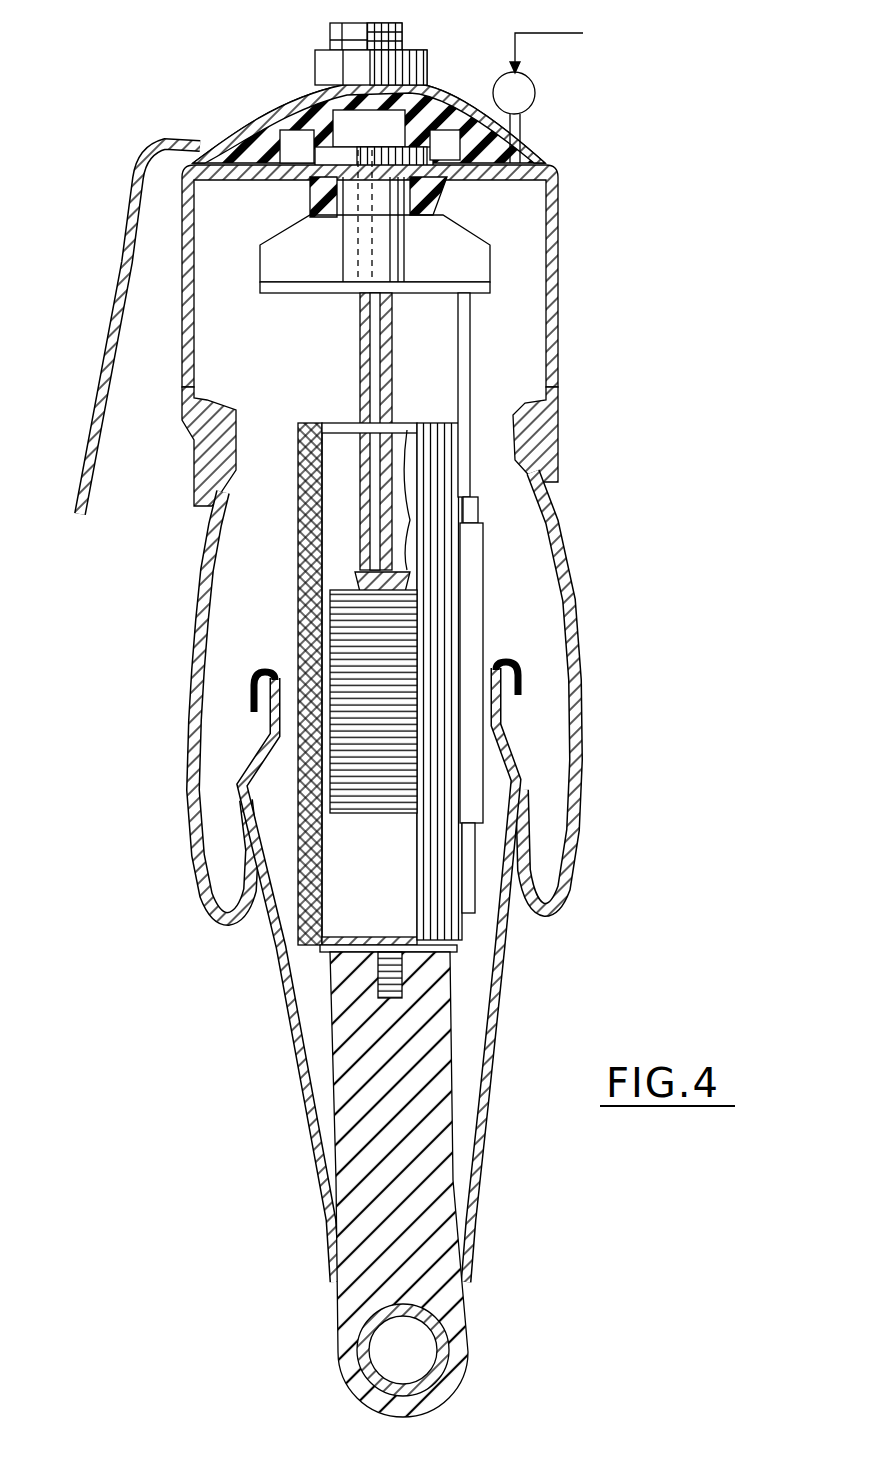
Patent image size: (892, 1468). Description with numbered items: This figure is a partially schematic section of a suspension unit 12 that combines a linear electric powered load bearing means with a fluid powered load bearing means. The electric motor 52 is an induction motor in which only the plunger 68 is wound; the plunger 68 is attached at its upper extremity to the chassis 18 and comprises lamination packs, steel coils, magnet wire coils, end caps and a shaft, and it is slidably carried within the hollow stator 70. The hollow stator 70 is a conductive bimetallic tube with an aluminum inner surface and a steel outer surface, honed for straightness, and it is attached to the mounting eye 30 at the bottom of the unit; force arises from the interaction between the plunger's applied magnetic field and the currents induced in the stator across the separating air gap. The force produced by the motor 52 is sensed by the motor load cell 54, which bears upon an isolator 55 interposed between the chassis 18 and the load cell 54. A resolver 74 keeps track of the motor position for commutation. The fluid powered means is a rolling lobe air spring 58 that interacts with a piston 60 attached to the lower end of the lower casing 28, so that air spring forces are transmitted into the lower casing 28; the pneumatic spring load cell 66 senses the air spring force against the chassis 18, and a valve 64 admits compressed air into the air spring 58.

The suspension unit 12 is at (344, 719).
The chassis 18 is at (128, 182).
The lower casing 28 is at (350, 1288).
The mounting eye 30 is at (447, 1360).
The electric motor 52 is at (274, 432).
The motor load cell 54 is at (472, 252).
The isolator 55 is at (430, 178).
The rolling lobe air spring 58 is at (195, 650).
The piston 60 is at (503, 1027).
The valve 64 is at (537, 93).
The pneumatic spring load cell 66 is at (282, 137).
The plunger 68 is at (397, 660).
The hollow stator 70 is at (292, 552).
The resolver 74 is at (472, 582).